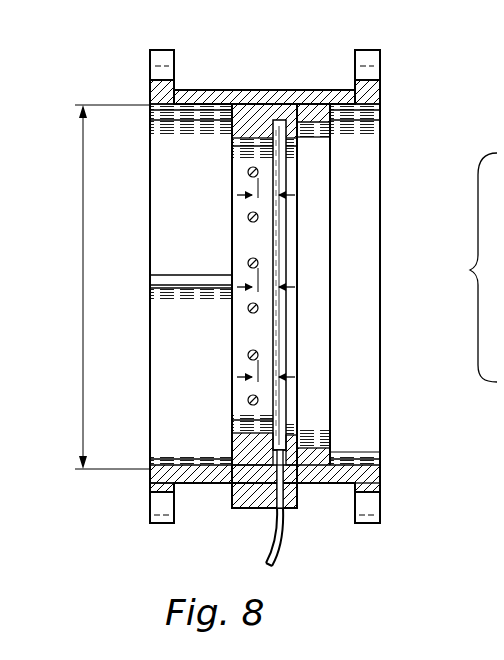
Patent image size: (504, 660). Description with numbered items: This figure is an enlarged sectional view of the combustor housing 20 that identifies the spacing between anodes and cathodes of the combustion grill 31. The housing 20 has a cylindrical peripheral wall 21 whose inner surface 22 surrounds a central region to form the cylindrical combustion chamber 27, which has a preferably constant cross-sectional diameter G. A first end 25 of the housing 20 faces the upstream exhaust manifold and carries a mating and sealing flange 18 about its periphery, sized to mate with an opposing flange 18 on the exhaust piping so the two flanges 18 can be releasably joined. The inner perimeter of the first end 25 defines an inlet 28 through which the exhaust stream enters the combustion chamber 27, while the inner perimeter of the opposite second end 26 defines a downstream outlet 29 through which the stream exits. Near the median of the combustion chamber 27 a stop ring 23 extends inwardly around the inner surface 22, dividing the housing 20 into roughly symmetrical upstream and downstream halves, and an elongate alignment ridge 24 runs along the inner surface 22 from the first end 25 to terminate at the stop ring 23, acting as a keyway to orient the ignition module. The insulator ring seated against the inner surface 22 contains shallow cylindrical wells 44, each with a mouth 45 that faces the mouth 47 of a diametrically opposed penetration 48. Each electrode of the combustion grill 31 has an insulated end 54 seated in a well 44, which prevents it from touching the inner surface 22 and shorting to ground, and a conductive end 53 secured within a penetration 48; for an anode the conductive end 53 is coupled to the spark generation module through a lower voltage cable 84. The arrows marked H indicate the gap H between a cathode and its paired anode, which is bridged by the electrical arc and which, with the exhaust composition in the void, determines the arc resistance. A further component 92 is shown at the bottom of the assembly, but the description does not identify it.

The mating and sealing flange 18 is at (166, 50).
The housing 20 is at (150, 97).
The cylindrical peripheral wall 21 is at (203, 96).
The inner surface 22 is at (168, 110).
The stop ring 23 is at (330, 283).
The alignment ridge 24 is at (207, 274).
The first end 25 is at (150, 453).
The second end 26 is at (380, 458).
The combustion chamber 27 is at (210, 198).
The inlet 28 is at (150, 345).
The downstream outlet 29 is at (380, 358).
The combustion grill 31 is at (470, 270).
The well 44 is at (264, 124).
The mouth of well 45 is at (300, 147).
The mouth of penetration 47 is at (273, 432).
The penetration 48 is at (296, 446).
The conductive end 53 is at (282, 432).
The insulated end 54 is at (282, 120).
The lower voltage cable 84 is at (262, 550).
The bottom fitting 92 is at (232, 508).
The cross-sectional diameter G is at (83, 290).
The gap H is at (263, 200).